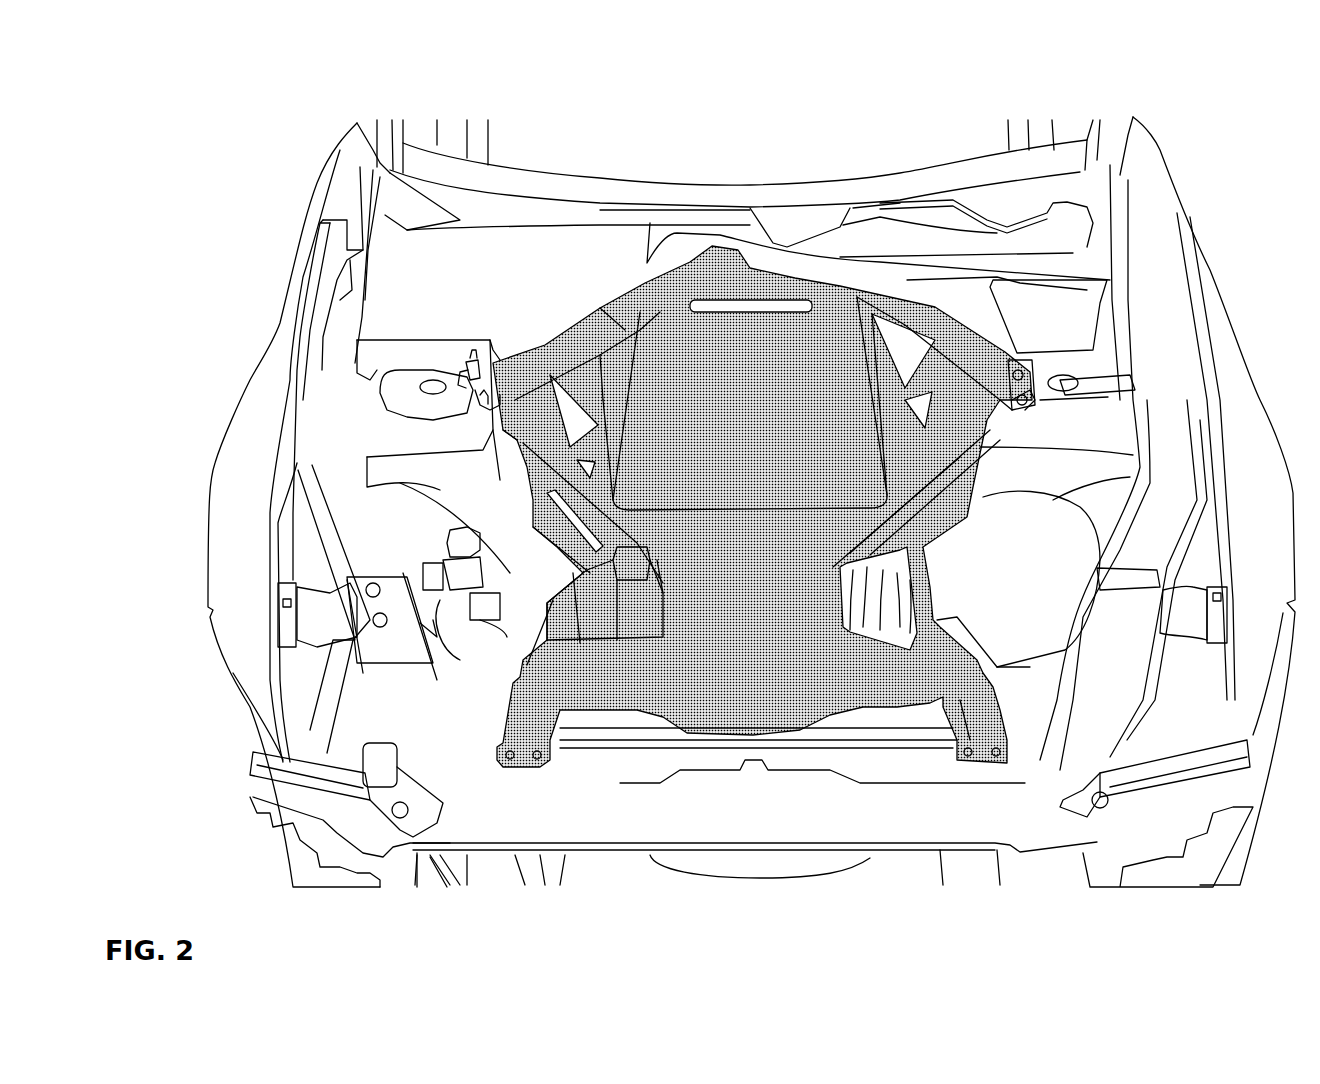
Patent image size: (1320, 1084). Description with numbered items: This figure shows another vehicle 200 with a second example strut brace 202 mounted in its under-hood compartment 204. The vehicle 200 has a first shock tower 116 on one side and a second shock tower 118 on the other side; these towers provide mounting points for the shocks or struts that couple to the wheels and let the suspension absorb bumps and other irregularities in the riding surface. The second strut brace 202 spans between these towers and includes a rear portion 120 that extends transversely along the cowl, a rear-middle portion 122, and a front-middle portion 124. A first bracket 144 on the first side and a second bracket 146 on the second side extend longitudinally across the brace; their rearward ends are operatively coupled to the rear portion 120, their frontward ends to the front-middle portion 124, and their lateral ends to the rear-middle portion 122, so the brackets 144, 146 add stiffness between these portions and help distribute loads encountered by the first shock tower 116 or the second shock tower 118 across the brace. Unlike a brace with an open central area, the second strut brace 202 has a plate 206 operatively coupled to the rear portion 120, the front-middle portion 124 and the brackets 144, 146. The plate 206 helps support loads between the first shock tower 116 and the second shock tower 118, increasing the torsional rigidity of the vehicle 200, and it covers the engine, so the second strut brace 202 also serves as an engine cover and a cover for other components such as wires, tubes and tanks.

The vehicle 200 is at (242, 66).
The first shock tower 116 is at (363, 363).
The second shock tower 118 is at (1110, 353).
The rear portion 120 is at (690, 262).
The rear-middle portion 122 is at (570, 343).
The front-middle portion 124 is at (840, 563).
The first bracket 144 is at (567, 333).
The second bracket 146 is at (915, 316).
The second strut brace 202 is at (967, 331).
The under-hood compartment 204 is at (345, 270).
The plate 206 is at (615, 290).